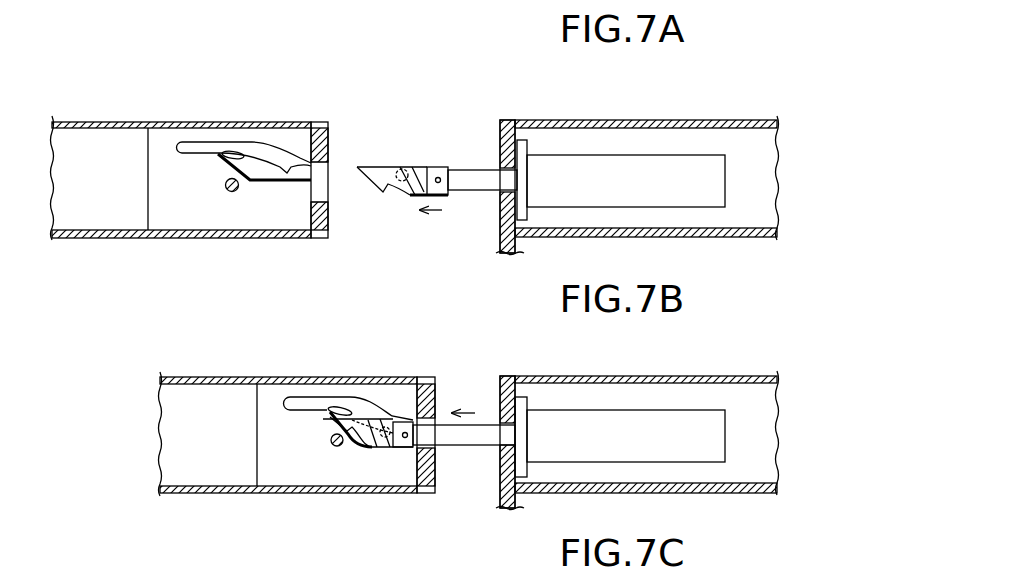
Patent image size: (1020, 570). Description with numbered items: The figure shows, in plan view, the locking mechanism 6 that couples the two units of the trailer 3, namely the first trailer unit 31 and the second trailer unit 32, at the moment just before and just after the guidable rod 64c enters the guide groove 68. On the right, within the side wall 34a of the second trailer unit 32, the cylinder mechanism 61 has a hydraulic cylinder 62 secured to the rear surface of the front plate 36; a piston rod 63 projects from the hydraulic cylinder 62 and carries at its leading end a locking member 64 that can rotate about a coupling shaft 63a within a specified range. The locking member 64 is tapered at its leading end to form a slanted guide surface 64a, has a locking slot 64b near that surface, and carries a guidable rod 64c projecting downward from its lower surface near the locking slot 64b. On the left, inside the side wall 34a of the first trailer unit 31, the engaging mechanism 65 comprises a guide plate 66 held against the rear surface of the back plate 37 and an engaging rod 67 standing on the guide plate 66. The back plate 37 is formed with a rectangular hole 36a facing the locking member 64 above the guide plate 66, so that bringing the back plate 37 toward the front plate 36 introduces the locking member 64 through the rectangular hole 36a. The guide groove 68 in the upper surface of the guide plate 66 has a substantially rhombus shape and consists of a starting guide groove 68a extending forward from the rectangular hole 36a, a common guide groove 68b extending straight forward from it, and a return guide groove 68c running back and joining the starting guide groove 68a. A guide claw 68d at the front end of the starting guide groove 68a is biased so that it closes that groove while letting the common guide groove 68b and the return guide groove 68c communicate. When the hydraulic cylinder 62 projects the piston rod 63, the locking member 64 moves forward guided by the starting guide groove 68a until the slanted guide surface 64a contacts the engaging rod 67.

In FIG. 7A, the trailer 3 is at (397, 189).
In FIG. 7B, the trailer 3 is at (454, 437).
In FIG. 7A, the first trailer unit 31 is at (196, 189).
In FIG. 7B, the first trailer unit 31 is at (279, 464).
In FIG. 7A, the second trailer unit 32 is at (617, 161).
In FIG. 7B, the second trailer unit 32 is at (641, 414).
In FIG. 7A, the side wall 34a is at (93, 122).
In FIG. 7A, the front plate 36 is at (328, 224).
In FIG. 7B, the front plate 36 is at (426, 435).
In FIG. 7A, the rectangular hole 36a is at (330, 178).
In FIG. 7A, the back plate 37 is at (500, 143).
In FIG. 7B, the back plate 37 is at (510, 443).
In FIG. 7A, the locking mechanism 6 is at (238, 325).
In FIG. 7A, the cylinder mechanism 61 is at (533, 169).
In FIG. 7B, the cylinder mechanism 61 is at (493, 449).
In FIG. 7A, the hydraulic cylinder 62 is at (599, 218).
In FIG. 7B, the hydraulic cylinder 62 is at (585, 427).
In FIG. 7A, the piston rod 63 is at (469, 188).
In FIG. 7B, the piston rod 63 is at (504, 500).
In FIG. 7A, the coupling shaft 63a is at (439, 177).
In FIG. 7A, the locking member 64 is at (403, 153).
In FIG. 7B, the locking member 64 is at (364, 493).
In FIG. 7A, the slanted guide surface 64a is at (355, 168).
In FIG. 7B, the slanted guide surface 64a is at (328, 424).
In FIG. 7A, the locking slot 64b is at (386, 185).
In FIG. 7A, the guidable rod 64c is at (406, 168).
In FIG. 7B, the guidable rod 64c is at (383, 450).
In FIG. 7A, the engaging mechanism 65 is at (226, 181).
In FIG. 7B, the engaging mechanism 65 is at (356, 457).
In FIG. 7A, the guide plate 66 is at (191, 212).
In FIG. 7B, the guide plate 66 is at (277, 472).
In FIG. 7A, the engaging rod 67 is at (273, 238).
In FIG. 7B, the engaging rod 67 is at (318, 488).
In FIG. 7A, the guide groove 68 is at (217, 166).
In FIG. 7B, the guide groove 68 is at (369, 453).
In FIG. 7A, the starting guide groove 68a is at (280, 160).
In FIG. 7B, the starting guide groove 68a is at (353, 452).
In FIG. 7A, the common guide groove 68b is at (185, 148).
In FIG. 7A, the return guide groove 68c is at (228, 150).
In FIG. 7B, the return guide groove 68c is at (380, 410).
In FIG. 7A, the guide claw 68d is at (232, 168).
In FIG. 7B, the guide claw 68d is at (336, 405).